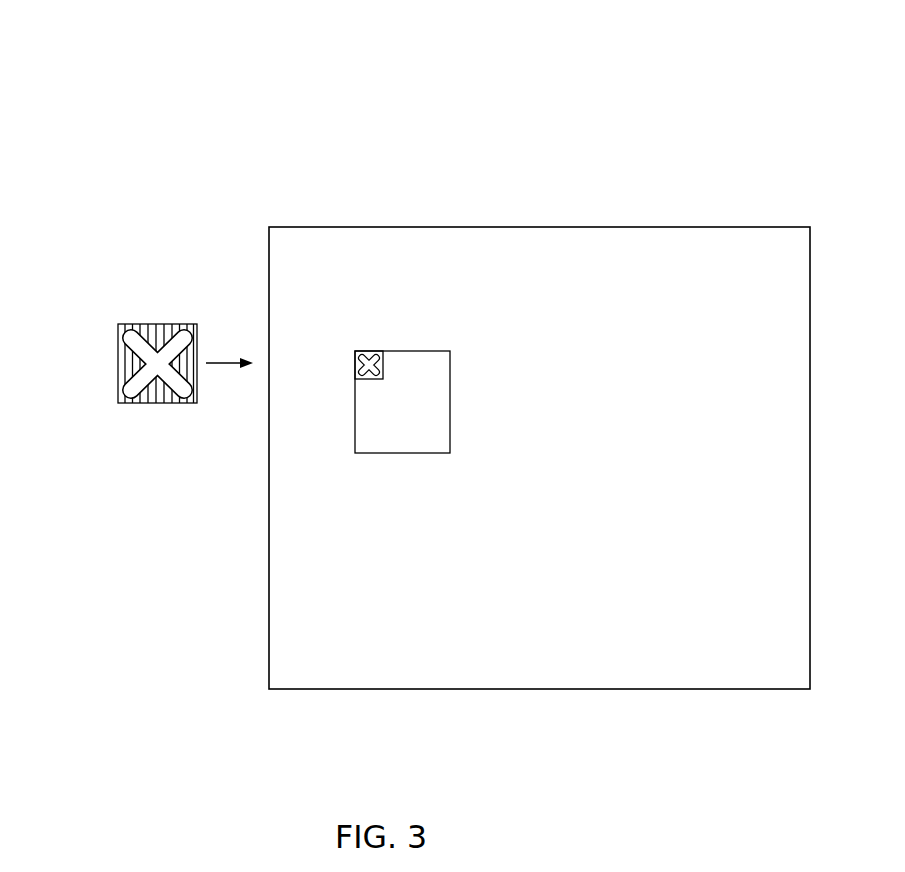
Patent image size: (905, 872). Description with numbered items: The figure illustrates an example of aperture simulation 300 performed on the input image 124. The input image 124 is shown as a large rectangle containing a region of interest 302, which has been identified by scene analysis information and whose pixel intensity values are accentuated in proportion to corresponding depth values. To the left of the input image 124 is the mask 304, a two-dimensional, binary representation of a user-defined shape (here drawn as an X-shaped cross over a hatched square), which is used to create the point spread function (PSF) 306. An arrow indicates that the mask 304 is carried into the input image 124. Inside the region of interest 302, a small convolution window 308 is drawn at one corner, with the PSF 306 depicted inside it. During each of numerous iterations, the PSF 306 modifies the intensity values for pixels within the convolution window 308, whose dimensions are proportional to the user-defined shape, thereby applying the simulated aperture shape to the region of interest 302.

The aperture simulation 300 is at (240, 72).
The mask 304 is at (117, 351).
The input image 124 is at (503, 689).
The region of interest 302 is at (450, 413).
The convolution window 308 is at (368, 350).
The point spread function (PSF) 306 is at (357, 370).